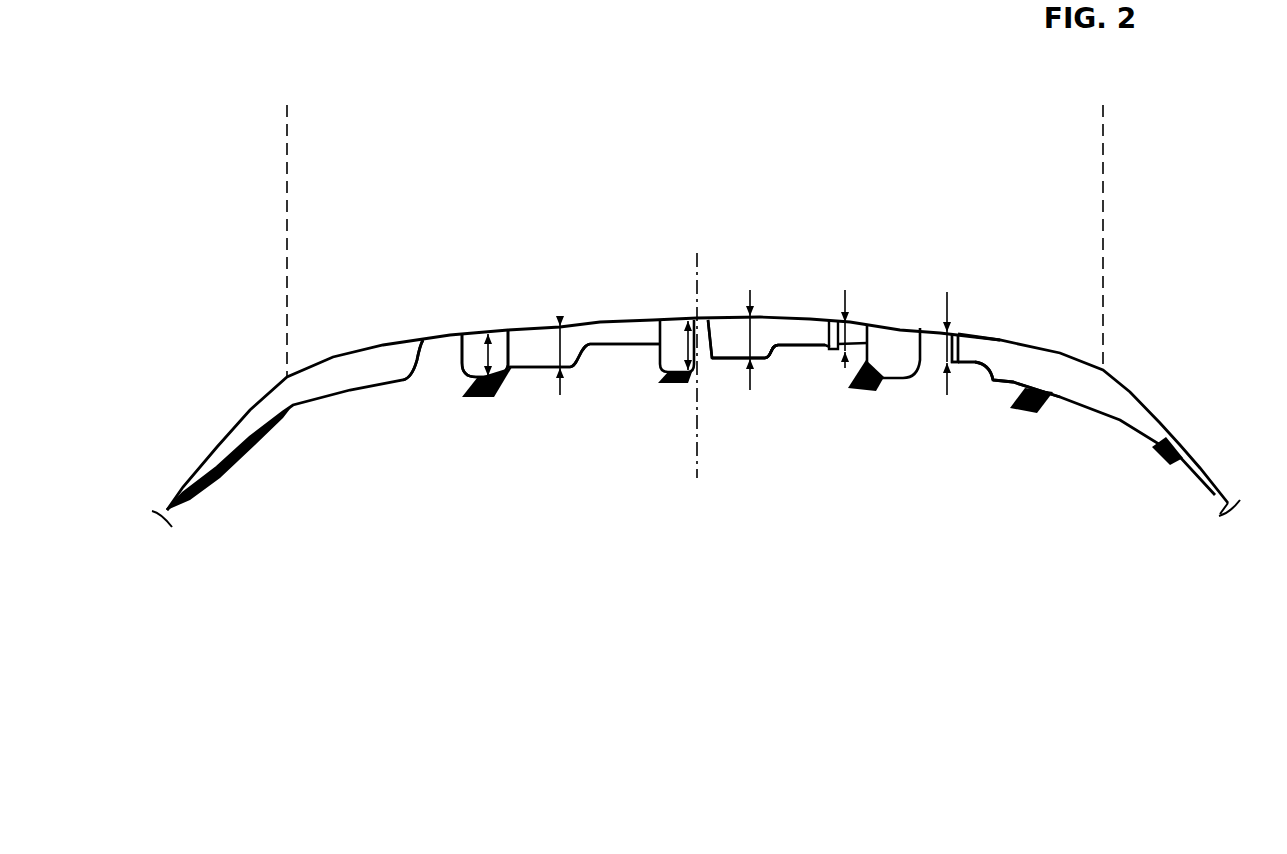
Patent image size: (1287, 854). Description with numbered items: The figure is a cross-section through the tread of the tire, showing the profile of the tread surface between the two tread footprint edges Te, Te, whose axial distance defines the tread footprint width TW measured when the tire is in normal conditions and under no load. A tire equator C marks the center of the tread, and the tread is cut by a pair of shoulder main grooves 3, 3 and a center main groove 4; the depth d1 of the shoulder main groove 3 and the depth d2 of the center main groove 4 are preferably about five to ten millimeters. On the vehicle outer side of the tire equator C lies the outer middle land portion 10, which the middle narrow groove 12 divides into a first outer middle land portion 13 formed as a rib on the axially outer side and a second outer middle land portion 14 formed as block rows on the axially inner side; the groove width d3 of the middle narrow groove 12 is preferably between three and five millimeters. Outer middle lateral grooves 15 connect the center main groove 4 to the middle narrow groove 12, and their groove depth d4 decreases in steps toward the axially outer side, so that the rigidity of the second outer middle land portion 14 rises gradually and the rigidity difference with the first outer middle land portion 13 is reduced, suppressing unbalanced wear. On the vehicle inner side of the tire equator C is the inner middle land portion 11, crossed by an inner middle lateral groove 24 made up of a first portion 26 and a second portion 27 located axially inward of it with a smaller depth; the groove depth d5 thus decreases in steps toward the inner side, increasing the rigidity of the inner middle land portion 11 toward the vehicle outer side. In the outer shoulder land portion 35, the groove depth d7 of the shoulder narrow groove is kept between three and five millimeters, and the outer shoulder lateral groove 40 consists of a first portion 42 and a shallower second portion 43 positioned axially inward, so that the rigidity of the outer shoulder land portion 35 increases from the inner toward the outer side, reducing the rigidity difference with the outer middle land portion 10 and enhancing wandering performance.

The shoulder main groove 3 is at (497, 339).
The inner middle lateral groove 24 is at (473, 190).
The first portion 26 is at (533, 341).
The second portion 27 is at (620, 332).
The inner middle land portion 11 is at (632, 320).
The center main groove 4 is at (706, 324).
The outer middle land portion 10 is at (902, 155).
The second outer middle land portion 14 is at (787, 317).
The first outer middle land portion 13 is at (856, 328).
The outer middle lateral groove 15 is at (774, 330).
The middle narrow groove 12 is at (832, 323).
The outer shoulder lateral groove 40 is at (1090, 190).
The second portion 43 is at (973, 354).
The first portion 42 is at (1043, 361).
The outer shoulder land portion 35 is at (1007, 329).
The depth of shoulder main groove d1 is at (488, 357).
The depth of center main groove d2 is at (688, 343).
The groove width of middle narrow groove d3 is at (872, 325).
The groove depth of outer middle lateral groove d4 is at (750, 334).
The groove depth of inner middle lateral groove d5 is at (560, 318).
The groove depth of shoulder narrow groove d7 is at (945, 330).
The tread footprint edge Te is at (287, 187).
The tread footprint width TW is at (287, 112).
The tire equator C is at (693, 351).